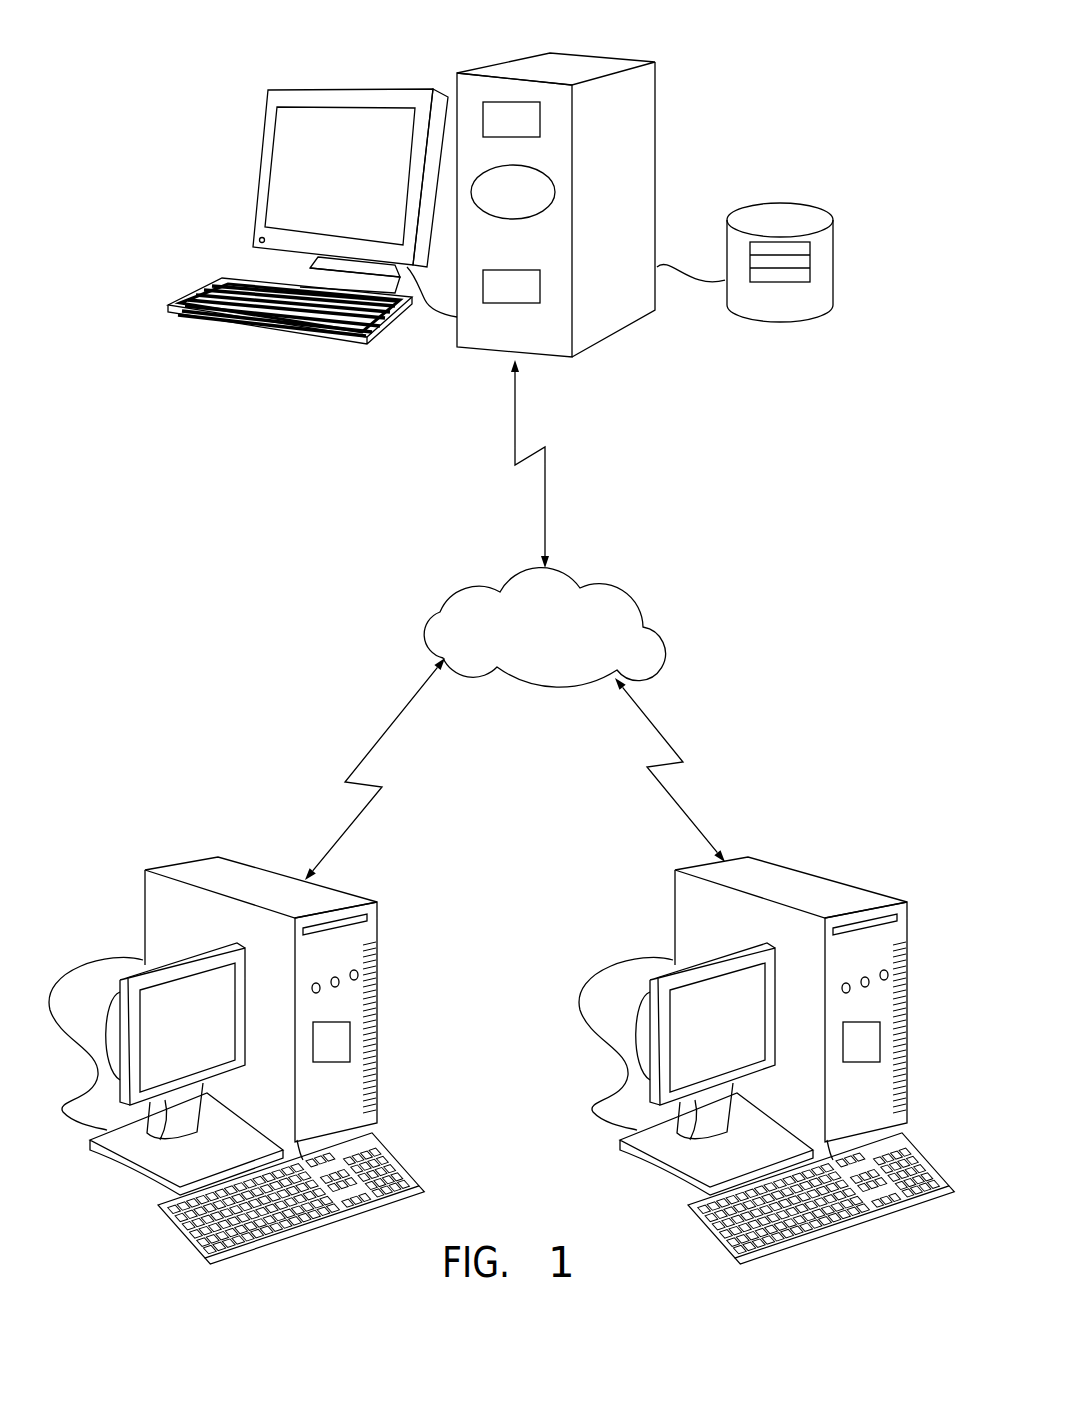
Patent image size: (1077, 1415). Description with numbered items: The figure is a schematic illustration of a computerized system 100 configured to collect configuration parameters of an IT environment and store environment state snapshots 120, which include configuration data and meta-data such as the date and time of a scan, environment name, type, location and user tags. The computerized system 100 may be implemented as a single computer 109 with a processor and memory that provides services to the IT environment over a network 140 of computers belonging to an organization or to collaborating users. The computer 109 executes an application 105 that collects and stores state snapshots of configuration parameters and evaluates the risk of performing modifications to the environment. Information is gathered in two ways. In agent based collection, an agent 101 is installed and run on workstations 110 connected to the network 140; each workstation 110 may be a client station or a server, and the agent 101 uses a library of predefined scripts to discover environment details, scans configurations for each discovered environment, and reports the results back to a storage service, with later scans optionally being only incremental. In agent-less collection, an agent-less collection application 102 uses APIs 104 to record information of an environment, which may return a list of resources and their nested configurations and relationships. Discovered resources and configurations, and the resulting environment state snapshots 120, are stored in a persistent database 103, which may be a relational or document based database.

The computerized system 100 is at (160, 55).
The single computer 109 is at (640, 53).
The API 104 is at (540, 118).
The application 105 is at (555, 184).
The agent-less collection application 102 is at (540, 282).
The database 103 is at (833, 230).
The environment state snapshots 120 is at (810, 248).
The network 140 is at (635, 592).
The workstation 110 is at (172, 867).
The agent 101 is at (350, 1037).